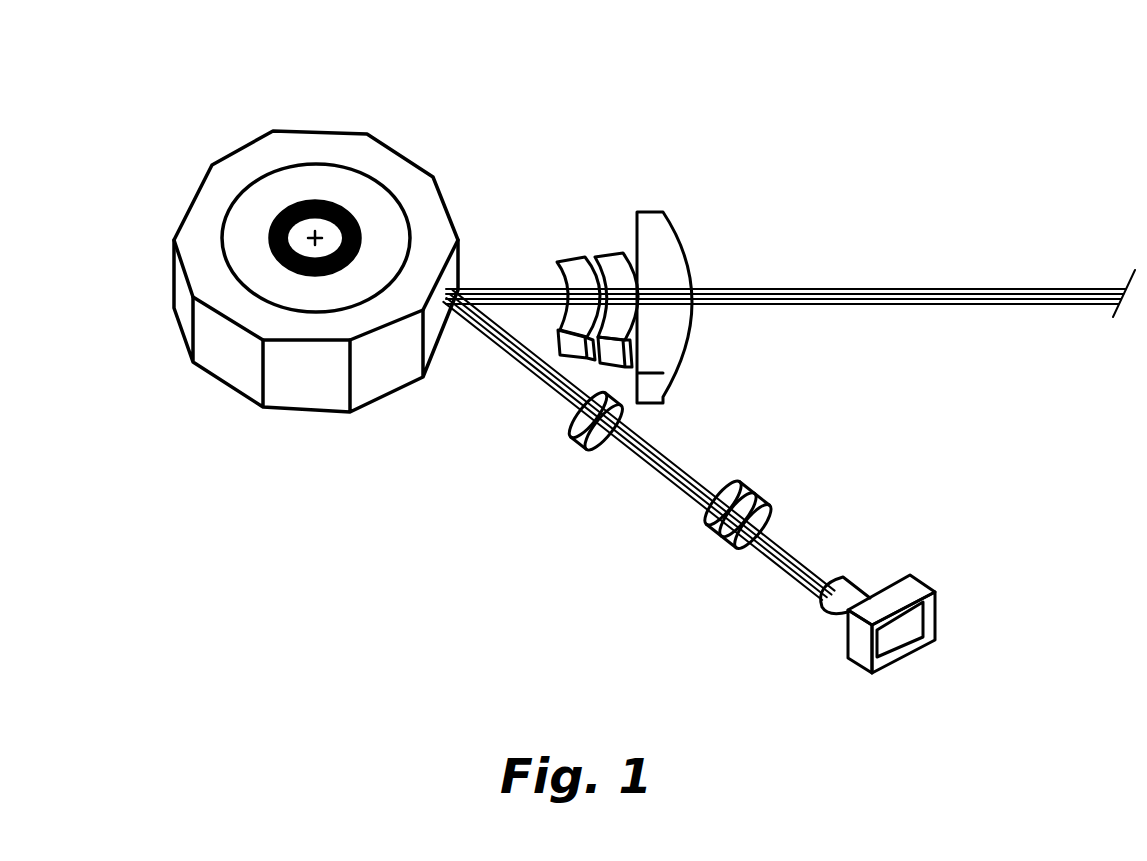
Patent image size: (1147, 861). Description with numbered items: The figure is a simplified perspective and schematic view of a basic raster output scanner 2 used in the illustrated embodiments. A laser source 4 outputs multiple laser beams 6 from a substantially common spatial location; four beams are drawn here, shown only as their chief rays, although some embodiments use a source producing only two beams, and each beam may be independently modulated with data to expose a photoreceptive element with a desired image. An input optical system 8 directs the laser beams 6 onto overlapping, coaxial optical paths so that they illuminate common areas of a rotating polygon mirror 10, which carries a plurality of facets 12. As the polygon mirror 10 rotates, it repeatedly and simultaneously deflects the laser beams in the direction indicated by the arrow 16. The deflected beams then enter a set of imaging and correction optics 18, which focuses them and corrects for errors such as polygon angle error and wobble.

The raster output scanner 2 is at (155, 90).
The laser source 4 is at (923, 577).
The laser beams 6 is at (805, 553).
The input optical system 8 is at (707, 547).
The rotating polygon mirror 10 is at (338, 118).
The facets 12 is at (318, 385).
The arrow 16 is at (922, 222).
The imaging and correction optics 18 is at (645, 198).